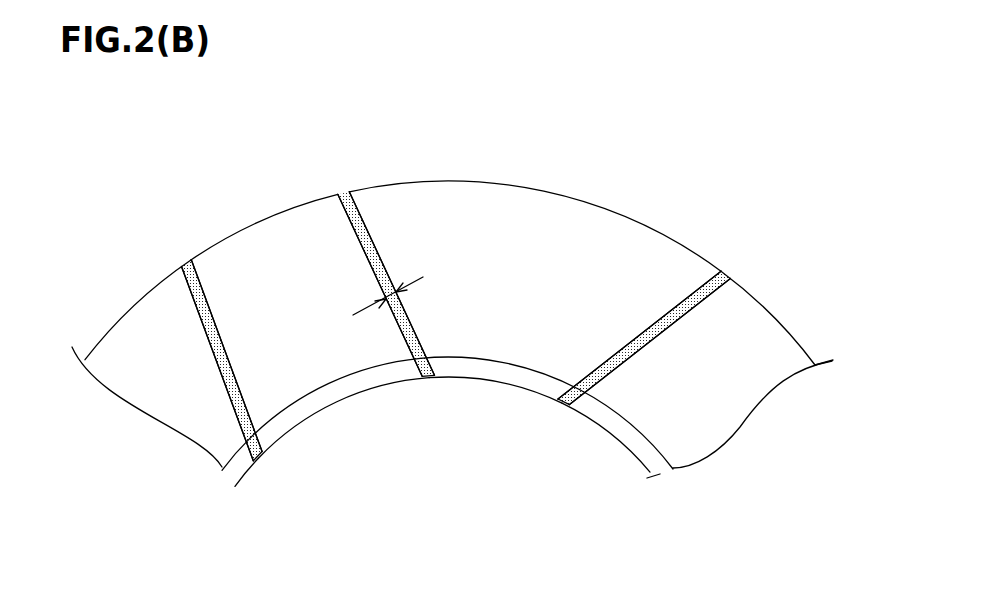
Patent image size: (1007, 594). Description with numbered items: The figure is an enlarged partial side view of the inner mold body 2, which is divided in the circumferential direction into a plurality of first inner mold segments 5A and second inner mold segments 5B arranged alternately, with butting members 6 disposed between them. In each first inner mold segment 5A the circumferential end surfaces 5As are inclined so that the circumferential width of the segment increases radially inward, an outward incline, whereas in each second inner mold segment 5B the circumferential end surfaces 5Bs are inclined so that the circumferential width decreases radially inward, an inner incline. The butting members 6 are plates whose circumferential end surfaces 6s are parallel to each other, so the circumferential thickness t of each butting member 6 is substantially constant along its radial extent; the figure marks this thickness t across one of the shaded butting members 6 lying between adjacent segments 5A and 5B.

The inner mold body 2 is at (703, 135).
The first inner mold segment 5A is at (277, 257).
The second inner mold segment 5B is at (613, 237).
The circumferential end surface of first inner mold segment 5As is at (206, 322).
The circumferential end surface of second inner mold segment 5Bs is at (378, 271).
The butting member 6 is at (266, 461).
The circumferential end surface of butting member 6s is at (238, 417).
The circumferential thickness t is at (400, 309).